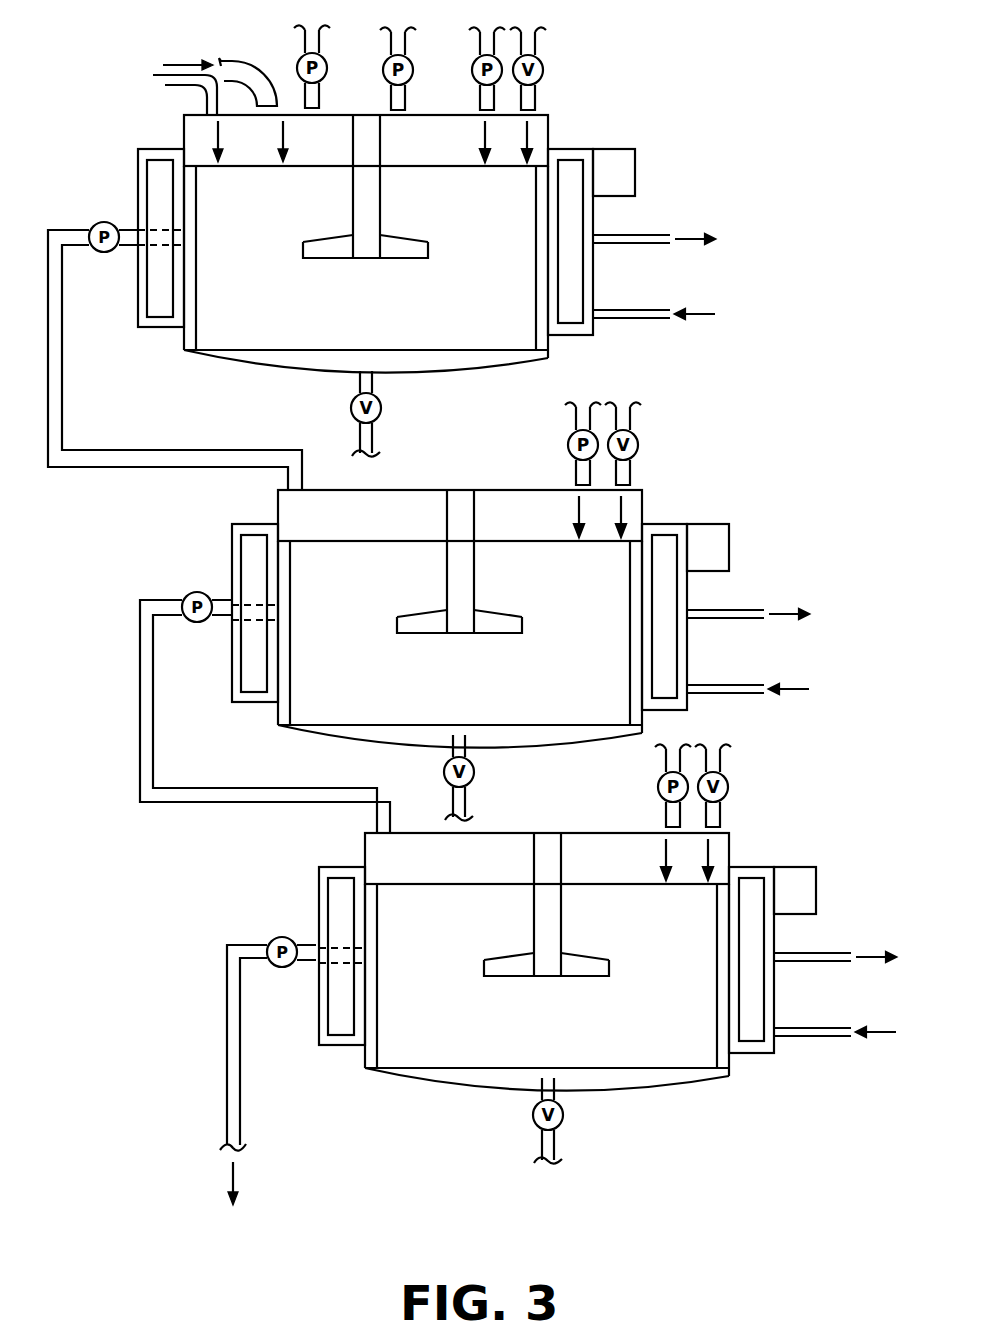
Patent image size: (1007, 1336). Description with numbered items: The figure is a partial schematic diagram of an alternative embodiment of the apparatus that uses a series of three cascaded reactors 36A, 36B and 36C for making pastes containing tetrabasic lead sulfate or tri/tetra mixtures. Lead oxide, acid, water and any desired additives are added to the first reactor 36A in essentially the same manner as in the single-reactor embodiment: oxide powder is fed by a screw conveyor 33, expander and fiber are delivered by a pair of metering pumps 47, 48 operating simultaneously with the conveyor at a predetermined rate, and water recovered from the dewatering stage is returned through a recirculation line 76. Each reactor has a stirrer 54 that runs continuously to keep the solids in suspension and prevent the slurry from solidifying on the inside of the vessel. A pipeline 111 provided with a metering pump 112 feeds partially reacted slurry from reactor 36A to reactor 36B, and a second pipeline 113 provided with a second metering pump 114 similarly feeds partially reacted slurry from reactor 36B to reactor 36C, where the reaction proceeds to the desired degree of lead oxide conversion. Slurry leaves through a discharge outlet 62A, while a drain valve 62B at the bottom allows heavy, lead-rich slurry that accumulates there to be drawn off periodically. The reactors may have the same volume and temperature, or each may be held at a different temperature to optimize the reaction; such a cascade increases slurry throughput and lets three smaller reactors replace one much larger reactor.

The screw conveyor 33 is at (235, 76).
The first reactor 36A is at (185, 350).
The second reactor 36B is at (279, 733).
The third reactor 36C is at (366, 1072).
The metering pump 47 is at (328, 70).
The metering pump 48 is at (414, 70).
The stirrer 54 is at (375, 114).
The discharge outlet 62A is at (228, 1110).
The drain valve 62B is at (564, 1118).
The recirculation line 76 is at (158, 83).
The pipeline 111 is at (62, 374).
The metering pump 112 is at (92, 226).
The second pipeline 113 is at (140, 768).
The second metering pump 114 is at (184, 598).